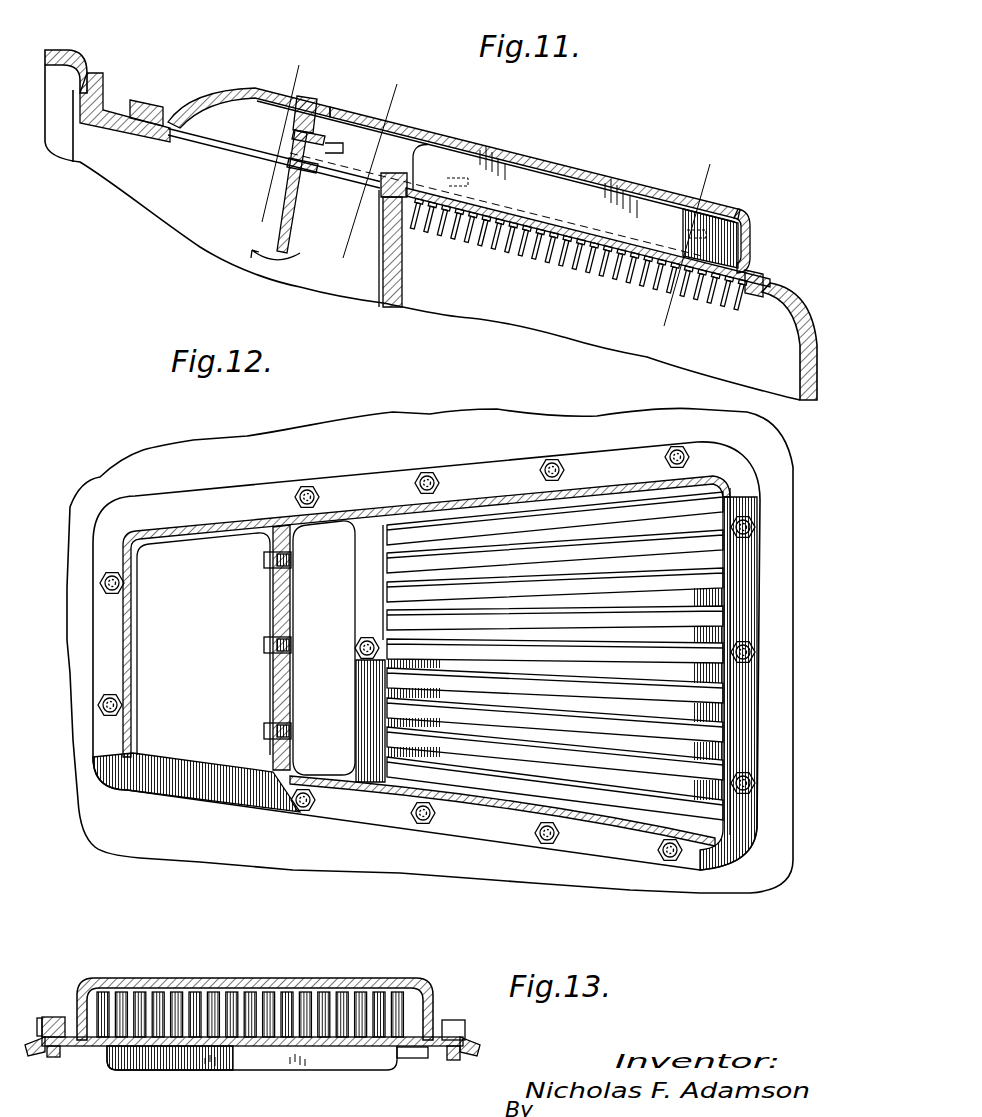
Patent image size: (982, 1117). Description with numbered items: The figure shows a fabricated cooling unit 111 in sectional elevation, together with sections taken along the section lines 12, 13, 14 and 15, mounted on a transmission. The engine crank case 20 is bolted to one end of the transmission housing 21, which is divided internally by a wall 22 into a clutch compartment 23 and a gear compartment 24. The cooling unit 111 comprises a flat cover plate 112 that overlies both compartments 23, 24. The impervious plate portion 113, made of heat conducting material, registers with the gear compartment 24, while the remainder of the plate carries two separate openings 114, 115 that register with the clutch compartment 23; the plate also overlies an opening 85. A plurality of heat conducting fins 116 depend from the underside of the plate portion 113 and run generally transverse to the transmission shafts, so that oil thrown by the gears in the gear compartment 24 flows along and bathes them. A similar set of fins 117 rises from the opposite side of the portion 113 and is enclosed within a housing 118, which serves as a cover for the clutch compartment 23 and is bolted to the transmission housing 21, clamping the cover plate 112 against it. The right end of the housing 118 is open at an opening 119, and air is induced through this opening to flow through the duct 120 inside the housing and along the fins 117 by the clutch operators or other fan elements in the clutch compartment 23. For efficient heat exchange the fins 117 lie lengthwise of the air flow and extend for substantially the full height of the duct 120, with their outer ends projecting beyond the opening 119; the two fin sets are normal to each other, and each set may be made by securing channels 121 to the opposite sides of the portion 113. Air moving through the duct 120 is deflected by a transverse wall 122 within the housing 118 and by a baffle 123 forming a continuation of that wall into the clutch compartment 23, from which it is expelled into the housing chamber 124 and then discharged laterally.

In FIG. 11, the section line 12— 12 is at (188, 101).
In FIG. 11, the section line 13— 13 is at (722, 181).
In FIG. 11, the section line 14— 14 is at (382, 97).
In FIG. 11, the section line 15— 15 is at (337, 82).
In FIG. 11, the crank case 20 is at (48, 49).
In FIG. 11, the transmission housing 21 is at (793, 330).
In FIG. 13, the transmission housing 21 is at (30, 1053).
In FIG. 11, the wall 22 is at (403, 296).
In FIG. 11, the clutch compartment 23 is at (236, 167).
In FIG. 11, the gear compartment 24 is at (500, 310).
In FIG. 11, the opening 85 is at (410, 198).
In FIG. 11, the fabricated cooling unit 111 is at (600, 162).
In FIG. 11, the cover plate 112 is at (766, 292).
In FIG. 12, the cover plate 112 is at (738, 470).
In FIG. 13, the cover plate 112 is at (413, 1058).
In FIG. 11, the impervious plate portion 113 is at (617, 272).
In FIG. 11, the opening 114 is at (322, 178).
In FIG. 12, the opening 114 is at (340, 684).
In FIG. 11, the opening 115 is at (173, 131).
In FIG. 12, the opening 115 is at (203, 667).
In FIG. 11, the heat conducting fins 116 is at (500, 228).
In FIG. 13, the heat conducting fins 116 is at (250, 1061).
In FIG. 11, the fins 117 is at (525, 197).
In FIG. 12, the fins 117 is at (715, 622).
In FIG. 13, the fins 117 is at (283, 992).
In FIG. 11, the housing 118 is at (540, 159).
In FIG. 12, the housing 118 is at (473, 497).
In FIG. 13, the housing 118 is at (397, 983).
In FIG. 11, the opening 119 is at (742, 216).
In FIG. 11, the duct 120 is at (400, 163).
In FIG. 11, the channels 121 is at (577, 252).
In FIG. 11, the transverse wall 122 is at (380, 98).
In FIG. 12, the transverse wall 122 is at (273, 610).
In FIG. 11, the baffle 123 is at (288, 250).
In FIG. 12, the baffle 123 is at (273, 700).
In FIG. 11, the housing chamber 124 is at (262, 95).